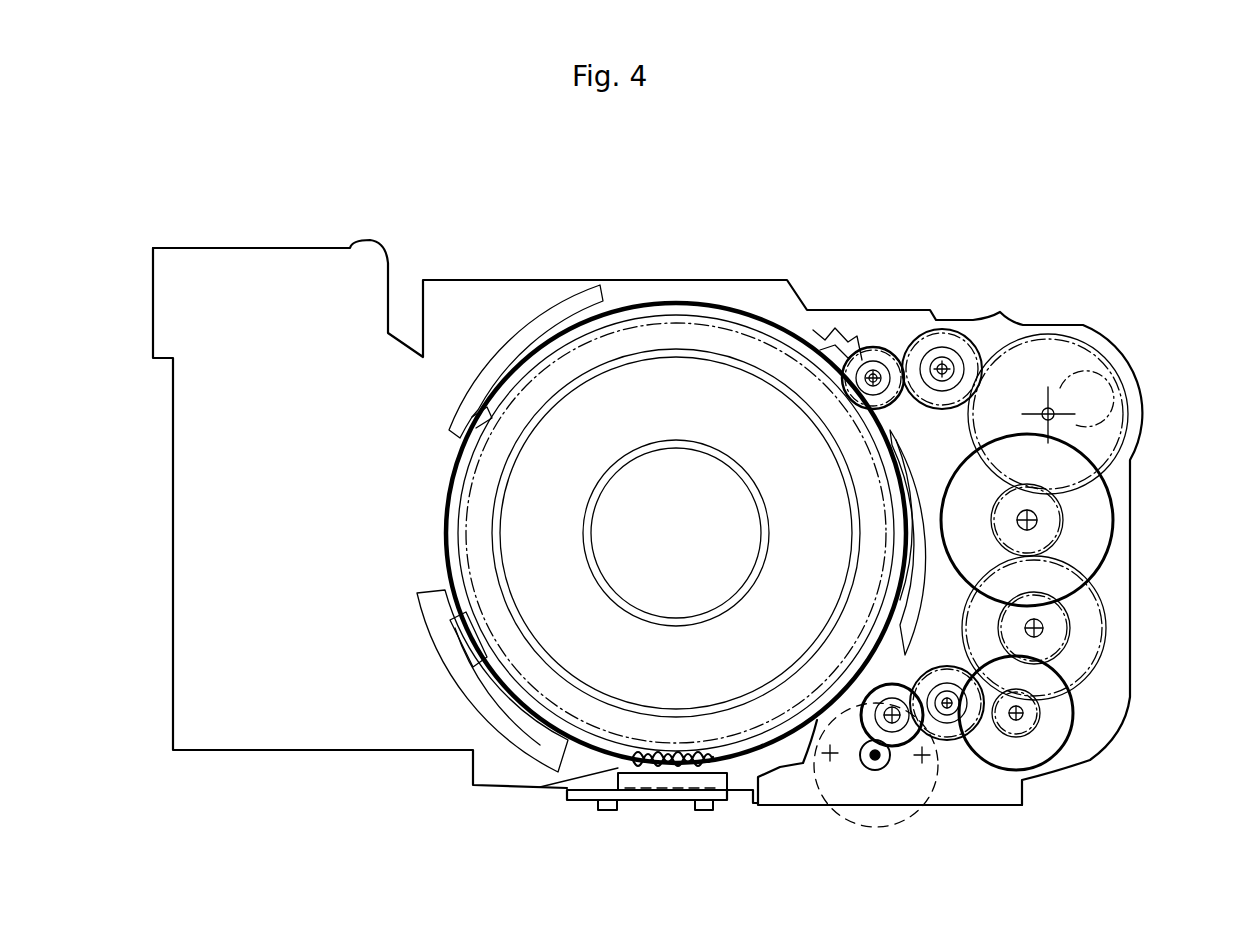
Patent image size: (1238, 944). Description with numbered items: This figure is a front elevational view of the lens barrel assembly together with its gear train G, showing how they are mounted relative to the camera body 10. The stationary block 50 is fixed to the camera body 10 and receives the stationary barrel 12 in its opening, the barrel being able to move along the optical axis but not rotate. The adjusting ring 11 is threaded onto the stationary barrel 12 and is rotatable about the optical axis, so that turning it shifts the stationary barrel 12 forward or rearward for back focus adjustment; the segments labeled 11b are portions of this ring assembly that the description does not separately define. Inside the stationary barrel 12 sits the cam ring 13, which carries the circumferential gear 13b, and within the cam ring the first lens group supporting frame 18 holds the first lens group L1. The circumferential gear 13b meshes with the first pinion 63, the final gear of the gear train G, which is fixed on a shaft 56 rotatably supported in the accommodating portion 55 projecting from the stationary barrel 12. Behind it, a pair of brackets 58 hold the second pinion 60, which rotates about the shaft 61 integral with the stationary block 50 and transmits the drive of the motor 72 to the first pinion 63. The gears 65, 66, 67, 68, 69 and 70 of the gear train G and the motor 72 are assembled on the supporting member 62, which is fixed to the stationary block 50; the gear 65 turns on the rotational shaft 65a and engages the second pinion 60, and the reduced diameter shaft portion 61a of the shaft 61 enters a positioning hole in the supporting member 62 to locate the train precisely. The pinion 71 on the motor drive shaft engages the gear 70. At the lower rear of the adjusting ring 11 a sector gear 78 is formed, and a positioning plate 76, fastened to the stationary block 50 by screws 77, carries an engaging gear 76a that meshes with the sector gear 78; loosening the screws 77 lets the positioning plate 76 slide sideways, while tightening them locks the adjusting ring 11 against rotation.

The stationary block 50 is at (671, 496).
The camera body 10 is at (671, 546).
The supporting member 62 is at (1130, 602).
The gear 69 is at (1000, 805).
The stationary barrel 12 is at (722, 302).
The cam ring 13 is at (680, 335).
The adjusting ring 11 is at (620, 300).
The first lens group supporting frame 18 is at (665, 365).
The first lens group L1 is at (645, 470).
The bayonet lug segments 11b is at (530, 325).
The circumferential gear 13b is at (815, 330).
The accommodating portion 55 is at (845, 350).
The shaft 56 is at (892, 352).
The first pinion 63 is at (871, 362).
The pair of brackets 58 is at (923, 338).
The reduced diameter shaft portion 61a is at (975, 345).
The second pinion 60 is at (955, 350).
The shaft 61 is at (950, 365).
The gear train G is at (1094, 332).
The gear 65 is at (1100, 382).
The rotational shaft 65a is at (1080, 416).
The gear 66 is at (1097, 525).
The gear 67 is at (1090, 628).
The gear 68 is at (1060, 718).
The gear 70 is at (905, 740).
The pinion 71 is at (877, 775).
The motor 72 is at (818, 805).
The positioning plate 76 is at (655, 800).
The engaging gear 76a is at (620, 770).
The screws 77 is at (605, 810).
The sector gear 78 is at (722, 768).